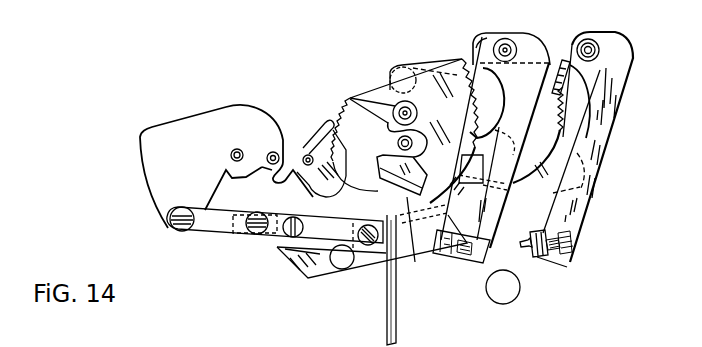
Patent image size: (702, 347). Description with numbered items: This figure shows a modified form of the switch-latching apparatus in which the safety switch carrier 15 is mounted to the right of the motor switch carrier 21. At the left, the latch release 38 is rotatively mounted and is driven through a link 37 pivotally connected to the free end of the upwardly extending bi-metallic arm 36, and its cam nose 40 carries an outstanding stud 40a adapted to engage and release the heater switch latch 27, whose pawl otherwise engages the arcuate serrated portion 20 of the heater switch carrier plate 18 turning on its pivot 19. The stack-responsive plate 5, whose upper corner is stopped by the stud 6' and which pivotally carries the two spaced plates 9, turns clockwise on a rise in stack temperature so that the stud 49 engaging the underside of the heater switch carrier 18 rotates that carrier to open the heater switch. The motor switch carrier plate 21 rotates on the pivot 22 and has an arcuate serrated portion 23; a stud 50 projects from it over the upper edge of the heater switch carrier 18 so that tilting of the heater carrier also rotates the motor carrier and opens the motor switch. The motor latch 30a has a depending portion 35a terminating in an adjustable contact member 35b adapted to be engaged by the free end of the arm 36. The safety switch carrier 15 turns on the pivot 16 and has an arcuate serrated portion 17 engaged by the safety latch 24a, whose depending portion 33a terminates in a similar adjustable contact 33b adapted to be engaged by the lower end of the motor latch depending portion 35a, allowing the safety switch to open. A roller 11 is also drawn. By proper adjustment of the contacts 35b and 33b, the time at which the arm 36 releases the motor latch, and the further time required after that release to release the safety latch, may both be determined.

The plate 5 is at (307, 279).
The stud 6' is at (468, 28).
The plates 9 is at (284, 251).
The roller 11 is at (505, 287).
The carrier plate 15 is at (551, 92).
The pivot 16 is at (478, 138).
The arcuate serrated portion 17 is at (563, 116).
The carrier plate 18 is at (423, 238).
The pivot 19 is at (397, 143).
The arcuate serrated portion 20 is at (341, 108).
The carrier plate 21 is at (405, 131).
The pivot 22 is at (402, 110).
The arcuate serrated portion 23 is at (465, 65).
The safety latch 24a is at (619, 100).
The heater switch latch 27 is at (303, 175).
The motor latch 30a is at (527, 46).
The depending portion 33a is at (597, 136).
The adjustable contact 33b is at (570, 239).
The depending portion 35a is at (487, 219).
The adjustable contact member 35b is at (468, 263).
The arm 36 is at (392, 298).
The link 37 is at (226, 231).
The latch release 38 is at (162, 177).
The cam nose 40 is at (264, 176).
The outstanding stud 40a is at (284, 140).
The stud 49 is at (342, 266).
The stud 50 is at (418, 68).